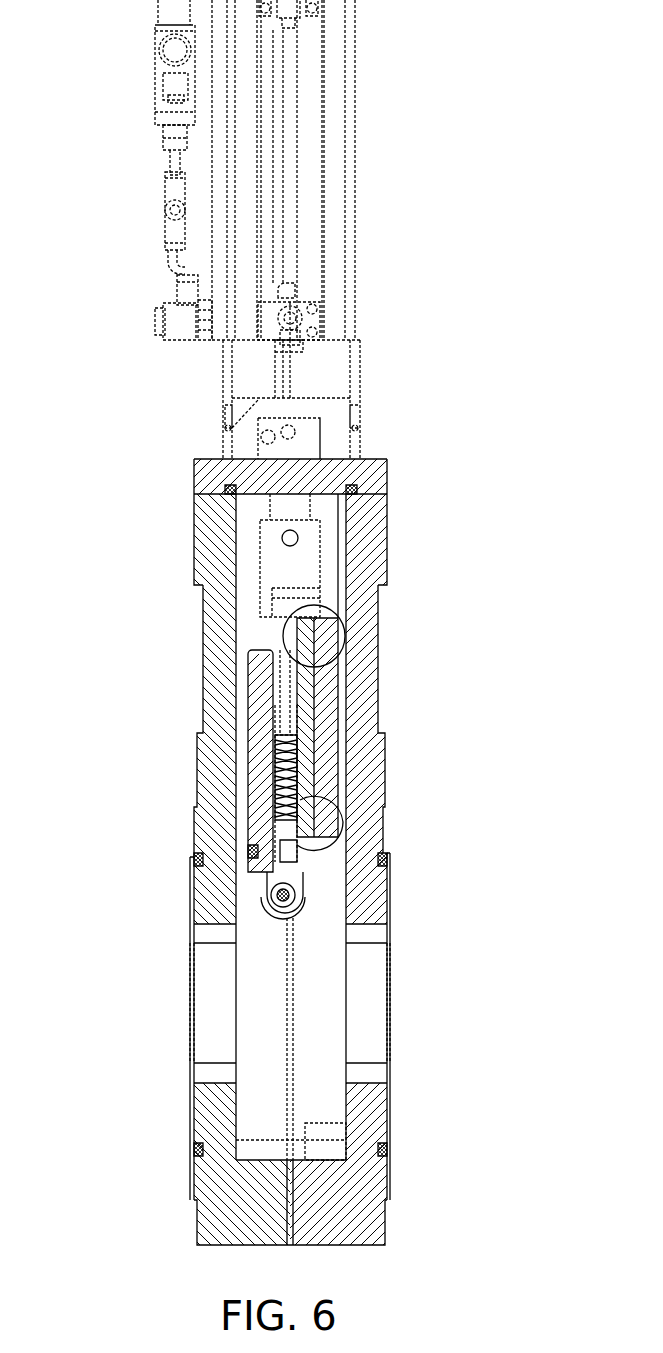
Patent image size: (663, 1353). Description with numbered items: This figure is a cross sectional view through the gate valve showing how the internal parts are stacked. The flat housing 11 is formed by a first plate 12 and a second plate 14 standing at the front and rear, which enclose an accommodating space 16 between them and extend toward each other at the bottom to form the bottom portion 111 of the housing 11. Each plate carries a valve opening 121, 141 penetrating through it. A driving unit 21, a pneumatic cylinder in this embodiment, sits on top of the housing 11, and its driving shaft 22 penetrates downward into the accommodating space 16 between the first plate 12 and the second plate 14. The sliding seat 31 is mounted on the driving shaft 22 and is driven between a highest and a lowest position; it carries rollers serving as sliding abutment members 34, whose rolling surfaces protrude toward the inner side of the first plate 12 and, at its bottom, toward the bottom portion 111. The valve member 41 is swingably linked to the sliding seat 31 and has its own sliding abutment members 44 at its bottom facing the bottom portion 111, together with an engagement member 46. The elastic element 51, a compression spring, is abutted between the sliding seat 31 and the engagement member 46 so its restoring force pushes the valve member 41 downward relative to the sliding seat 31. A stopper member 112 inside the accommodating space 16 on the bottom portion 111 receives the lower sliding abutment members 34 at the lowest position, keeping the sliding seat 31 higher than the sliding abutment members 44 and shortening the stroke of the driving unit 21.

The housing 11 is at (387, 570).
The bottom portion 111 is at (222, 1245).
The stopper member 112 is at (325, 1123).
The first plate 12 is at (385, 770).
The valve opening 121 is at (373, 968).
The second plate 14 is at (203, 622).
The valve opening 141 is at (212, 1008).
The accommodating space 16 is at (253, 960).
The driving unit 21 is at (355, 150).
The driving shaft 22 is at (318, 512).
The sliding seat 31 is at (340, 700).
The sliding abutment member 34 is at (335, 618).
The valve member 41 is at (246, 778).
The sliding abutment member 44 is at (275, 907).
The engagement member 46 is at (262, 830).
The elastic element 51 is at (283, 742).